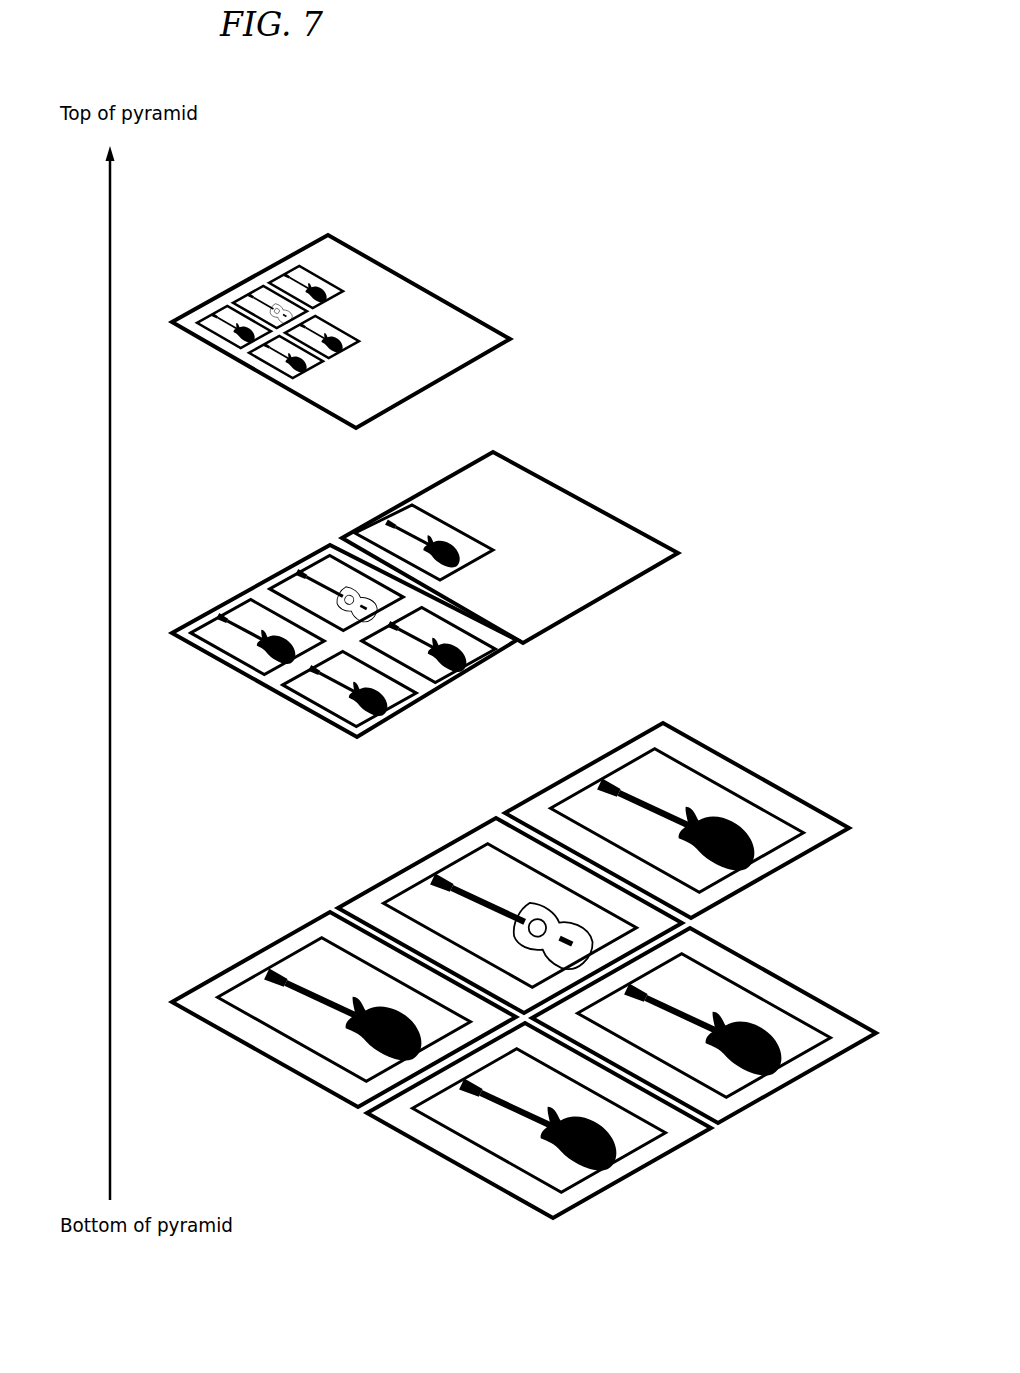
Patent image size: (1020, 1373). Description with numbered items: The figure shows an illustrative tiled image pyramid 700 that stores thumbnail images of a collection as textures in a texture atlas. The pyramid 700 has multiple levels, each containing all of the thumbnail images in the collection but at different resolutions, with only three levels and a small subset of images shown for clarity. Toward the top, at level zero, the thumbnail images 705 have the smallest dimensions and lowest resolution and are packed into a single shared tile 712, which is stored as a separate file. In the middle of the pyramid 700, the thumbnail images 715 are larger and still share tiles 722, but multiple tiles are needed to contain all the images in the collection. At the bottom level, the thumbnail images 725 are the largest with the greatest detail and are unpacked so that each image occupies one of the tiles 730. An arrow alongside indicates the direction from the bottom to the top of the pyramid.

The tiled image pyramid 700 is at (490, 171).
The thumbnail images 705 is at (376, 300).
The shared tile 712 is at (485, 353).
The thumbnail images 715 is at (231, 681).
The tiles 722 is at (250, 588).
The thumbnail images 725 is at (262, 1003).
The tiles 730 is at (247, 955).